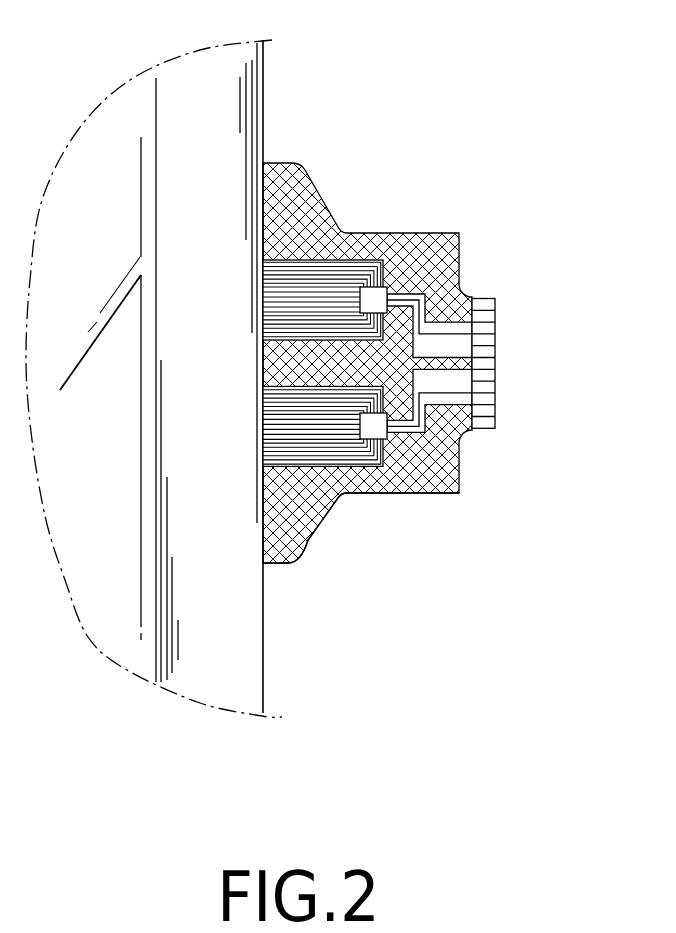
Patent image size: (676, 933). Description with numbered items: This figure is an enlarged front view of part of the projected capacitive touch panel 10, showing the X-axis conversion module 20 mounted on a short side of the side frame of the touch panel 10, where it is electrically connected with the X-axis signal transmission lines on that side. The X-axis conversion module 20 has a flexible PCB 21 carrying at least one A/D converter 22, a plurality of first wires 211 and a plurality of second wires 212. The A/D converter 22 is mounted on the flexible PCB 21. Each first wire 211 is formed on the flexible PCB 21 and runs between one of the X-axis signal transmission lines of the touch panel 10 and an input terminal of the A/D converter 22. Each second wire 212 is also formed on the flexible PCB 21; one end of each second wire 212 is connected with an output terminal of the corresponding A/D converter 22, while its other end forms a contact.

The touch panel 10 is at (246, 93).
The X-axis conversion module 20 is at (409, 369).
The flexible PCB 21 is at (308, 537).
The first wires 211 is at (303, 265).
The second wires 212 is at (452, 320).
The A/D converter 22 is at (378, 433).